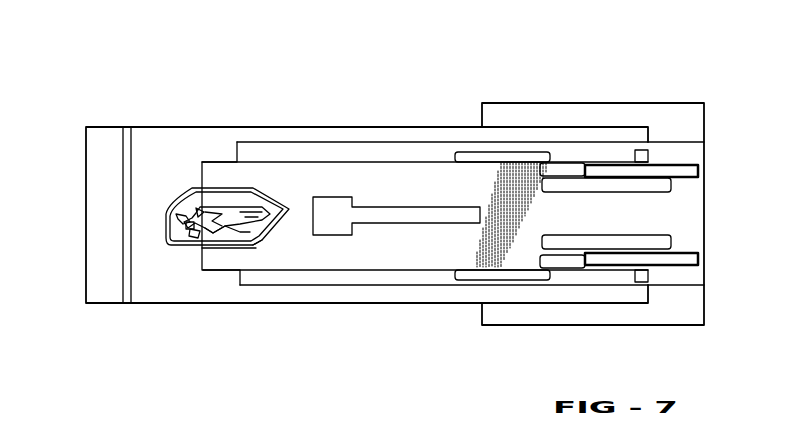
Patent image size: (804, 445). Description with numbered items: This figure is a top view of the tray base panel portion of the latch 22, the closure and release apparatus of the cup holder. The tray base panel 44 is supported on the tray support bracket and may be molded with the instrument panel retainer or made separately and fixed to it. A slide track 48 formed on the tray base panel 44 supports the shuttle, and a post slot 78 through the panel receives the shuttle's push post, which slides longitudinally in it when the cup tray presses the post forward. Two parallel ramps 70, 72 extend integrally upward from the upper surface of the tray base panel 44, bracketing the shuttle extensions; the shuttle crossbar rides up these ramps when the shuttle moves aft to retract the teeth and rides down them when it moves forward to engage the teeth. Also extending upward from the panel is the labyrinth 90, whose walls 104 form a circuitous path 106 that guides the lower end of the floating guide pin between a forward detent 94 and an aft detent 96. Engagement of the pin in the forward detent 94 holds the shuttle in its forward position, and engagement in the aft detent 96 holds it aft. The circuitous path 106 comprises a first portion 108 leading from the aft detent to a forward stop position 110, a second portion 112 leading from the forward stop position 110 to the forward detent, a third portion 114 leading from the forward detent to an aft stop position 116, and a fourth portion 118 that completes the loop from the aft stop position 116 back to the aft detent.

The latch 22 is at (678, 104).
The tray base panel 44 is at (95, 278).
The slide track 48 is at (243, 257).
The ramp 70 is at (677, 258).
The ramp 72 is at (678, 165).
The post slot 78 is at (417, 209).
The labyrinth 90 is at (245, 168).
The forward detent 94 is at (289, 210).
The aft detent 96 is at (250, 232).
The walls 104 is at (247, 197).
The circuitous path 106 is at (197, 206).
The first portion 108 is at (280, 200).
The forward stop position 110 is at (187, 227).
The second portion 112 is at (168, 243).
The third portion 114 is at (212, 212).
The aft stop position 116 is at (192, 228).
The fourth portion 118 is at (255, 240).